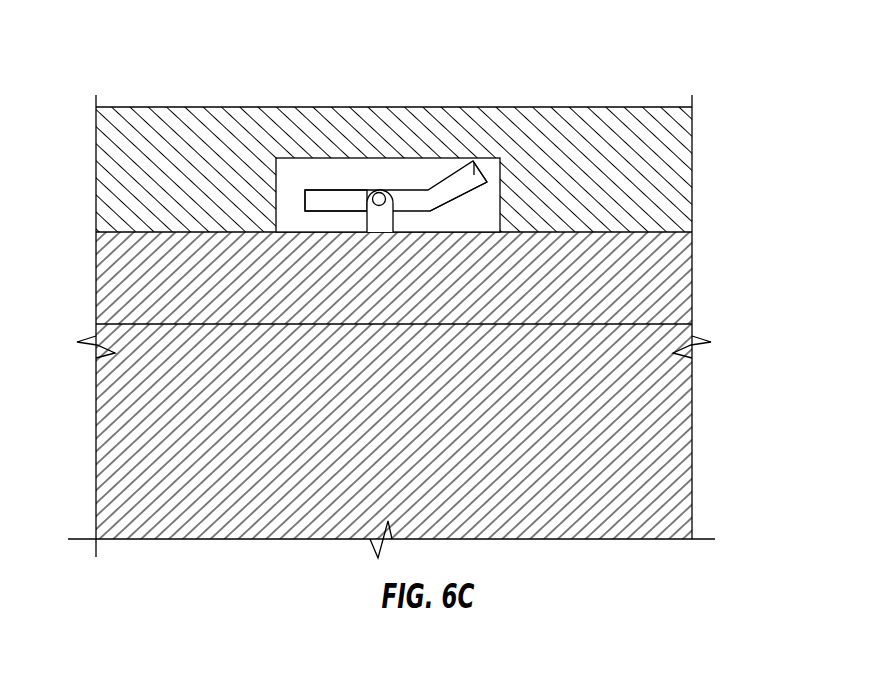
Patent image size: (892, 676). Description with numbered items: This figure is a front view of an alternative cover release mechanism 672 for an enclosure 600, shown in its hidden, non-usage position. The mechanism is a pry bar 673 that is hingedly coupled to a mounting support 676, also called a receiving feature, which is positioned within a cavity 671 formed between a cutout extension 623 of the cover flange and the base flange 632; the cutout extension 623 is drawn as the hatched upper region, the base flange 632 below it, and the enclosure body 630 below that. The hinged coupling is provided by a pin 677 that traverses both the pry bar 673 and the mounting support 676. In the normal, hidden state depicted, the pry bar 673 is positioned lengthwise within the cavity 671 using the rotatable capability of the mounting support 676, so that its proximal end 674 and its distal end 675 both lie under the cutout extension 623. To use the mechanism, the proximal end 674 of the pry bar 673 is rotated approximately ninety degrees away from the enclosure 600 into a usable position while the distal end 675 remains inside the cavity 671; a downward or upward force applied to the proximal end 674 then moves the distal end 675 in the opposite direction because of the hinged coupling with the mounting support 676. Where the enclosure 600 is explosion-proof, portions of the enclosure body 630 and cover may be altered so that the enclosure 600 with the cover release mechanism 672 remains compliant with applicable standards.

The enclosure 600 is at (117, 47).
The cutout extension 623 is at (117, 182).
The base flange 632 is at (132, 304).
The enclosure body 630 is at (372, 435).
The cavity 671 is at (292, 180).
The cover release mechanism 672 is at (433, 161).
The pry bar 673 is at (428, 211).
The proximal end 674 is at (475, 163).
The distal end 675 is at (325, 203).
The mounting support 676 is at (393, 222).
The pin 677 is at (379, 193).